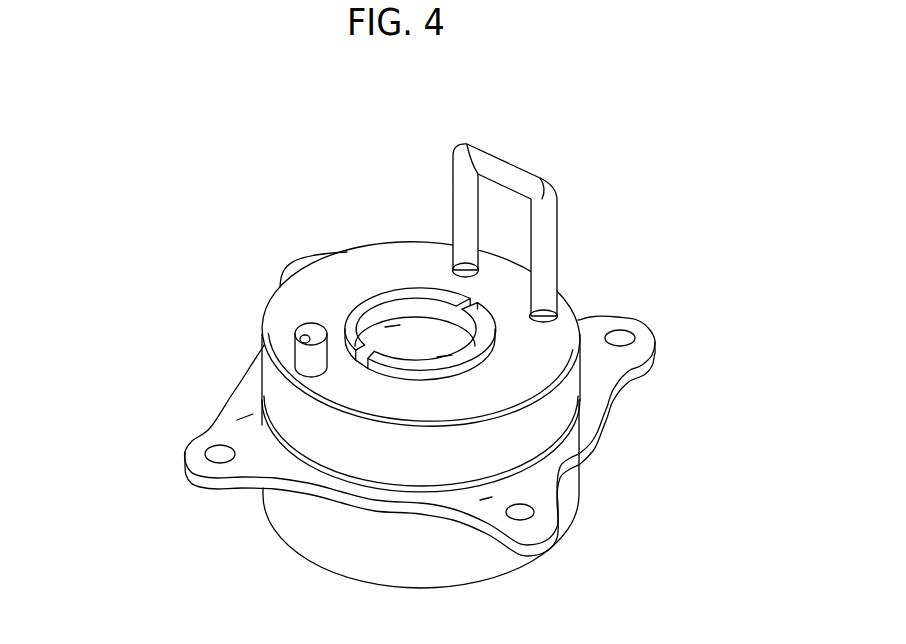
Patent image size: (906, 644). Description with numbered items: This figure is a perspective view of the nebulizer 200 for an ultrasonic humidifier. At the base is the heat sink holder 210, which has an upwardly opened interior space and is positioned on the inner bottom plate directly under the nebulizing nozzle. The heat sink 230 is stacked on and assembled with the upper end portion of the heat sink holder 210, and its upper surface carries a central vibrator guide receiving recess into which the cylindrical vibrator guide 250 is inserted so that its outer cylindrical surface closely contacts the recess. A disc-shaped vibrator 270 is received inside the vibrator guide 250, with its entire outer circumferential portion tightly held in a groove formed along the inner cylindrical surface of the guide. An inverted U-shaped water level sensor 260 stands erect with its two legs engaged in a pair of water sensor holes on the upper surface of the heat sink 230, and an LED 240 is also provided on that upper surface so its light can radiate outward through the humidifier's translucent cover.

The nebulizer 200 is at (230, 189).
The heat sink holder 210 is at (567, 493).
The heat sink 230 is at (365, 262).
The LED 240 is at (305, 327).
The vibrator guide 250 is at (494, 335).
The water level sensor 260 is at (523, 173).
The disc-shaped vibrator 270 is at (420, 325).